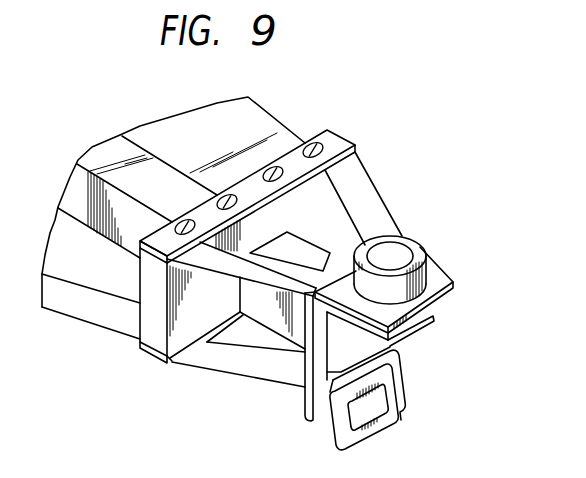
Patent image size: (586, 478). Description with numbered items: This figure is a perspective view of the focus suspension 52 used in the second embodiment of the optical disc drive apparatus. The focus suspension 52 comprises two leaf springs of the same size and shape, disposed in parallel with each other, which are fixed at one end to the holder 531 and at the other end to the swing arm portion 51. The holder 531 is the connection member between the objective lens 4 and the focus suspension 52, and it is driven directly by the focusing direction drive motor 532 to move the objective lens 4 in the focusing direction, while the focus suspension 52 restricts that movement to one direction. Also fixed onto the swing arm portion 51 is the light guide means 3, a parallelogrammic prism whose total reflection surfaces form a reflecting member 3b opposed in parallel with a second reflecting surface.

The swing arm portion 51 is at (284, 133).
The focus suspension 52 is at (368, 202).
The objective lens 4 is at (420, 250).
The holder 531 is at (455, 284).
The reflecting member 3b is at (425, 326).
The light guide means 3 is at (366, 344).
The focusing direction drive motor 532 is at (386, 413).